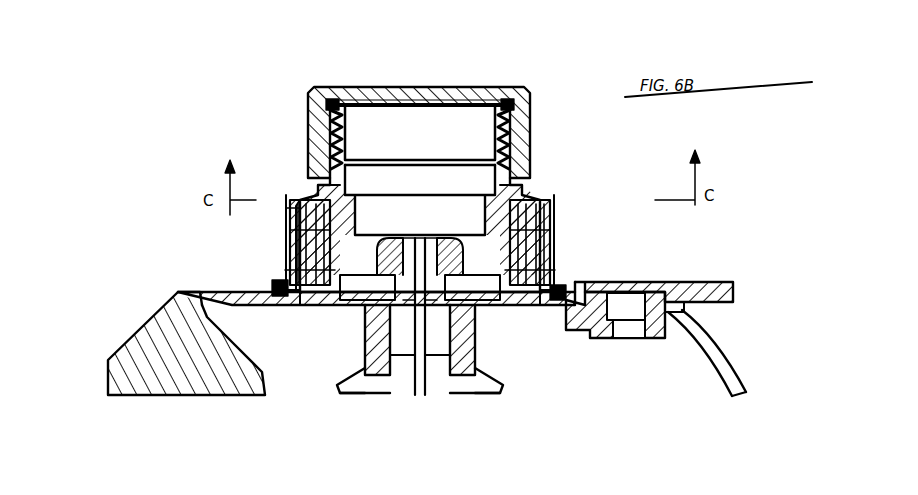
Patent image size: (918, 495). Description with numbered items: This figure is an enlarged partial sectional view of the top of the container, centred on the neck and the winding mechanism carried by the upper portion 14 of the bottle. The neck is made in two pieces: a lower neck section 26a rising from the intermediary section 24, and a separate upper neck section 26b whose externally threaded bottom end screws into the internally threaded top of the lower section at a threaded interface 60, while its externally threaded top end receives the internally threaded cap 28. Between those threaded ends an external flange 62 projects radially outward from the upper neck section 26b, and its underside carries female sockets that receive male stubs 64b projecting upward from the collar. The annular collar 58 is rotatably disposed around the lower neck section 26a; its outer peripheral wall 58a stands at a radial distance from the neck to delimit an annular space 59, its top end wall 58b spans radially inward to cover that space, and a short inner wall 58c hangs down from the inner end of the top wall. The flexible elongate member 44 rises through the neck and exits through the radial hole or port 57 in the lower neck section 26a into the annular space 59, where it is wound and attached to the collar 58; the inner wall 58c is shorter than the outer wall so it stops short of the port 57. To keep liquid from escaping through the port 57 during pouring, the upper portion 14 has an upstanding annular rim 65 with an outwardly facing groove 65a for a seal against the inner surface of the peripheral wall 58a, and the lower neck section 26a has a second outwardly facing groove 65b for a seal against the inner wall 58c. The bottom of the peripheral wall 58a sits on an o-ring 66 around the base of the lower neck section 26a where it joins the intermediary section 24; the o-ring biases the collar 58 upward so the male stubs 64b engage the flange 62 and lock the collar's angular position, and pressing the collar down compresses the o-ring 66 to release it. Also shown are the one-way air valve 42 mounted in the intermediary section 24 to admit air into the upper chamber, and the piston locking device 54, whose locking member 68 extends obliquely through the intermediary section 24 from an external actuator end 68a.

The upper portion 14 is at (726, 357).
The intermediary section 24 is at (704, 334).
The lower neck section 26a is at (296, 258).
The upper neck section 26b is at (492, 104).
The cap 28 is at (522, 88).
The one-way air valve 42 is at (678, 288).
The flexible elongate member 44 is at (412, 245).
The piston locking device 54 is at (165, 290).
The radial hole or port 57 is at (430, 248).
The annular collar 58 is at (556, 244).
The outer peripheral wall 58a is at (556, 228).
The top end wall 58b is at (548, 205).
The inner wall 58c is at (269, 193).
The annular space 59 is at (292, 243).
The threaded interface 60 is at (420, 136).
The external flange 62 is at (527, 170).
The male stubs 64b is at (545, 188).
The upstanding annular rim 65 is at (520, 302).
The outwardly facing groove 65a is at (270, 282).
The outwardly facing groove 65b is at (300, 200).
The o-ring 66 is at (580, 286).
The locking member 68 is at (146, 368).
The actuator end 68a is at (136, 332).